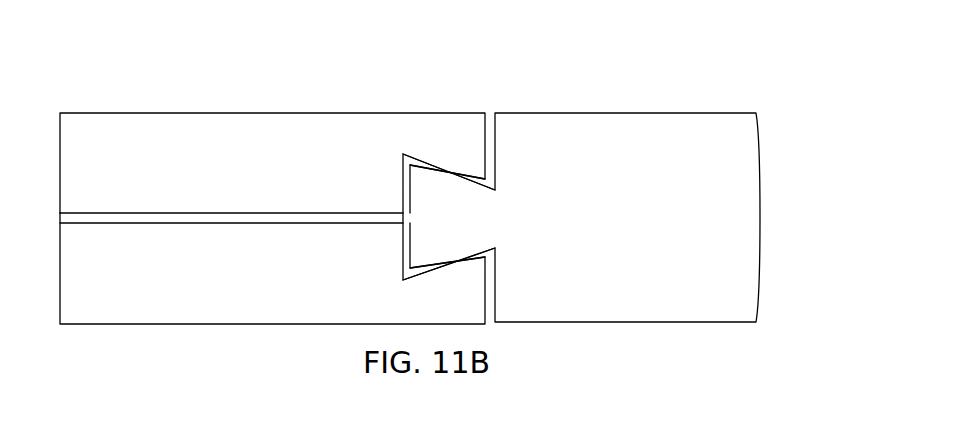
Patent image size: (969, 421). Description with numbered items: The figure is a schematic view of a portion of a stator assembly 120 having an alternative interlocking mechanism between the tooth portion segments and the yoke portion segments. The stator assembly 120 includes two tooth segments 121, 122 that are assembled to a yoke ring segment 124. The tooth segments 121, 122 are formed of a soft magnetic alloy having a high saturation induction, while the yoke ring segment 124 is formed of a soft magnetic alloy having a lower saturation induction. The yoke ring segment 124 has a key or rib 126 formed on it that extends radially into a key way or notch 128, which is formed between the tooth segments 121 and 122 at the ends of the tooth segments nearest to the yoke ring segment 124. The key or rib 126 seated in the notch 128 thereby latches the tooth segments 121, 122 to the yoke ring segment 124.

The stator assembly 120 is at (101, 98).
The tooth segment 121 is at (283, 123).
The tooth segment 122 is at (158, 314).
The yoke ring segment 124 is at (596, 115).
The key or rib 126 is at (450, 192).
The key way or notch 128 is at (406, 255).